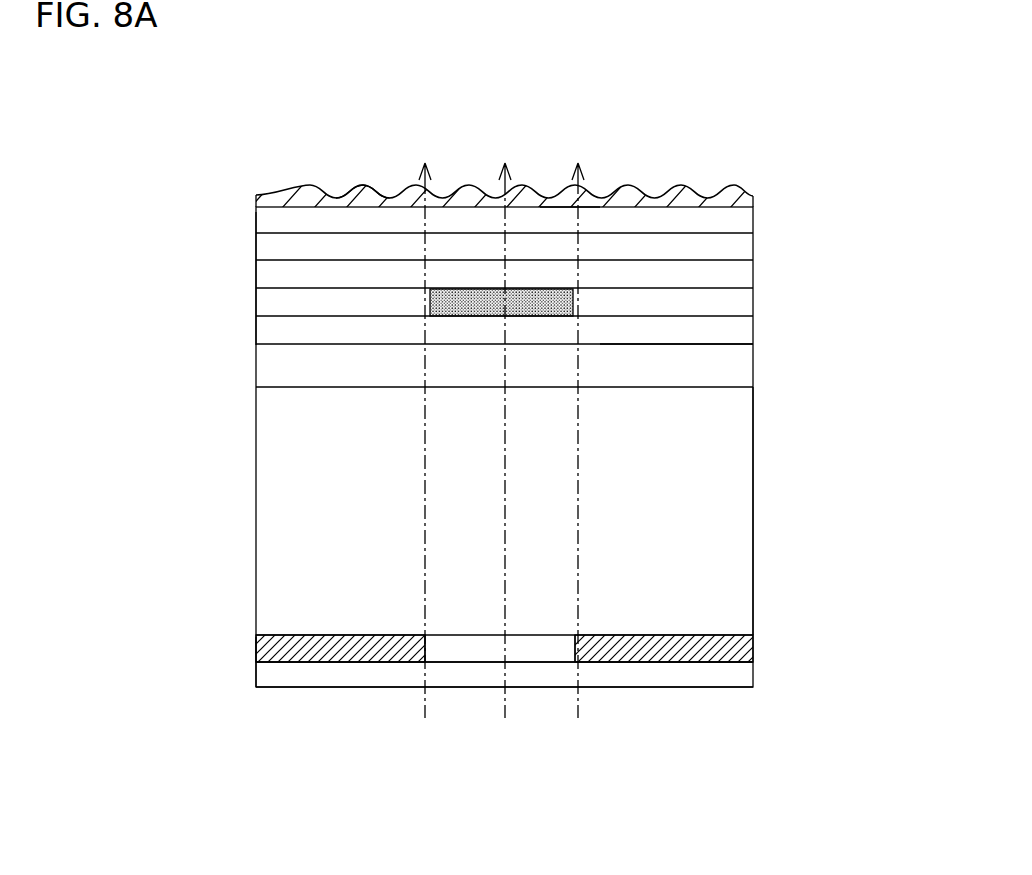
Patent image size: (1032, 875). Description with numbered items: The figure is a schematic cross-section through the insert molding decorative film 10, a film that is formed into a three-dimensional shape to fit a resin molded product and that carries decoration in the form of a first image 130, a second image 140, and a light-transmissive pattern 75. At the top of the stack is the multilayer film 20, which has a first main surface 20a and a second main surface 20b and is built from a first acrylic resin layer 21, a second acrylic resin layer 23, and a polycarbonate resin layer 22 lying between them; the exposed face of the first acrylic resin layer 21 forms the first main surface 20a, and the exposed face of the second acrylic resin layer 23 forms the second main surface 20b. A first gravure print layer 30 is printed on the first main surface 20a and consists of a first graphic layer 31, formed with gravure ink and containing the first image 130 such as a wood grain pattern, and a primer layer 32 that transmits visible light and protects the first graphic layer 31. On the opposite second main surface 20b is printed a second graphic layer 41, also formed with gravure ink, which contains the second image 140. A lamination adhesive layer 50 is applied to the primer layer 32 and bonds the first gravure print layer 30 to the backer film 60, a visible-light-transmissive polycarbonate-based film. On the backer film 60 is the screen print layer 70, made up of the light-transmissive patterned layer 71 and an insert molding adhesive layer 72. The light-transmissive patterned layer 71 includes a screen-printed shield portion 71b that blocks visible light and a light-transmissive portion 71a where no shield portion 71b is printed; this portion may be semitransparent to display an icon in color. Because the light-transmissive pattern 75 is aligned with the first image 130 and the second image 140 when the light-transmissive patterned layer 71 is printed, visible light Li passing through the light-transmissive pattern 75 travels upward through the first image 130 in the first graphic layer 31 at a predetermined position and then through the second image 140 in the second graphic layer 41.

The insert molding decorative film 10 is at (460, 171).
The multilayer film 20 is at (778, 212).
The first main surface 20a is at (674, 293).
The second main surface 20b is at (588, 204).
The first acrylic resin layer 21 is at (268, 277).
The polycarbonate resin layer 22 is at (266, 248).
The second acrylic resin layer 23 is at (268, 220).
The first gravure print layer 30 is at (778, 289).
The first graphic layer 31 is at (263, 303).
The primer layer 32 is at (262, 330).
The second graphic layer 41 is at (757, 197).
The lamination adhesive layer 50 is at (742, 373).
The backer film 60 is at (735, 541).
The screen print layer 70 is at (778, 637).
The light-transmissive patterned layer 71 is at (431, 699).
The light-transmissive portion 71a is at (473, 654).
The shield portion 71b is at (315, 655).
The insert molding adhesive layer 72 is at (262, 672).
The light-transmissive pattern 75 is at (574, 652).
The first image 130 is at (470, 308).
The second image 140 is at (366, 186).
The visible light Li is at (505, 708).